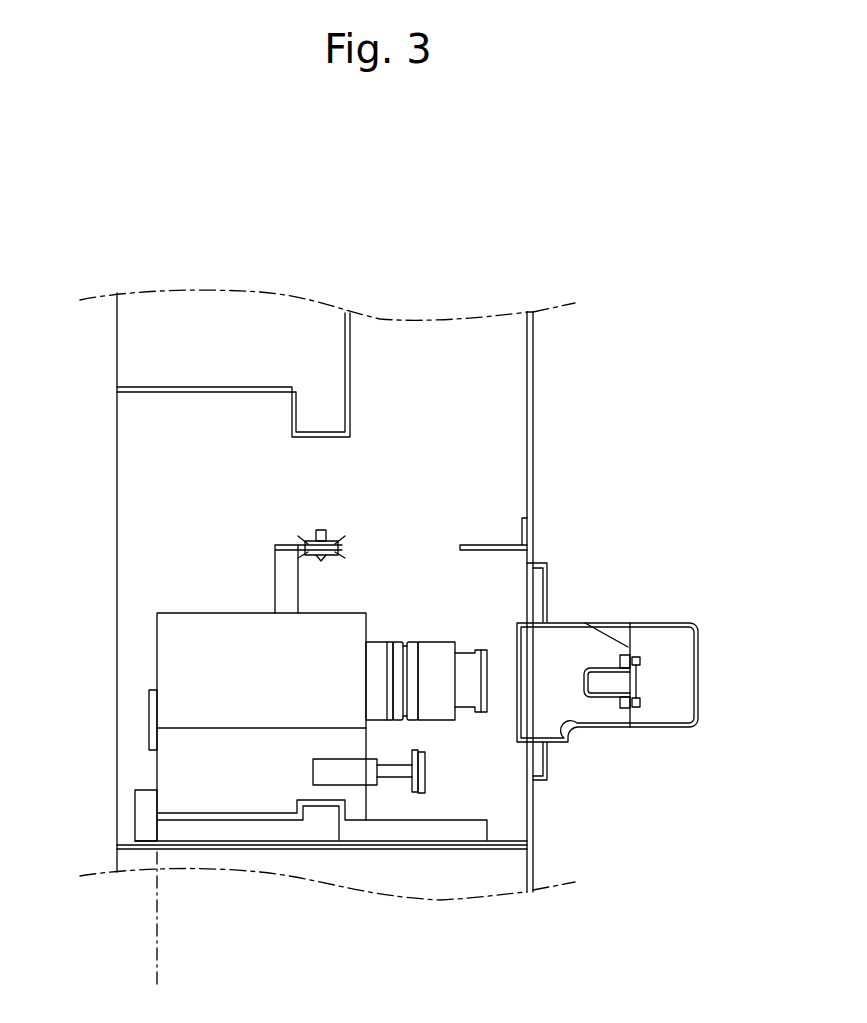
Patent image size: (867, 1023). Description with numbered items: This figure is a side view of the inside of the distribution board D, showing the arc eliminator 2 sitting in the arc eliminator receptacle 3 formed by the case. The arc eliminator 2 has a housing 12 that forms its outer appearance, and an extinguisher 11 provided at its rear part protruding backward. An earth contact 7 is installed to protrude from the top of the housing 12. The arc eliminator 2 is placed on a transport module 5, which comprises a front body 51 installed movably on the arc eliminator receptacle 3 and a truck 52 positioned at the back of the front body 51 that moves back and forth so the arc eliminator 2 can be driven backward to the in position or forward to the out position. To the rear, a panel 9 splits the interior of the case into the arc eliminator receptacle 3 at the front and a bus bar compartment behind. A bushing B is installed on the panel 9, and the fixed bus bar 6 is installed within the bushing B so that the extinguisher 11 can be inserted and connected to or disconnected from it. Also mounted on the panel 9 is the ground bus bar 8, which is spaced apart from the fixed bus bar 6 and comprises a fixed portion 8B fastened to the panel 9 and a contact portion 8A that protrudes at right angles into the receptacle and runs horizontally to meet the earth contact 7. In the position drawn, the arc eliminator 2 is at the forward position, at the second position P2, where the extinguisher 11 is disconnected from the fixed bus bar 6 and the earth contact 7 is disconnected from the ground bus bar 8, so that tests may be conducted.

The arc eliminator 2 is at (268, 688).
The arc eliminator receptacle 3 is at (168, 520).
The transport module 5 is at (205, 829).
The fixed bus bar 6 is at (606, 676).
The earth contact 7 is at (309, 520).
The ground bus bar 8 is at (543, 485).
The contact portion 8A is at (485, 545).
The fixed portion 8B is at (562, 519).
The panel 9 is at (534, 374).
The extinguisher 11 is at (434, 628).
The housing 12 is at (168, 672).
The front body 51 is at (145, 812).
The truck 52 is at (253, 820).
The bushing B is at (611, 645).
The distribution board D is at (496, 271).
The second position P2 is at (157, 930).